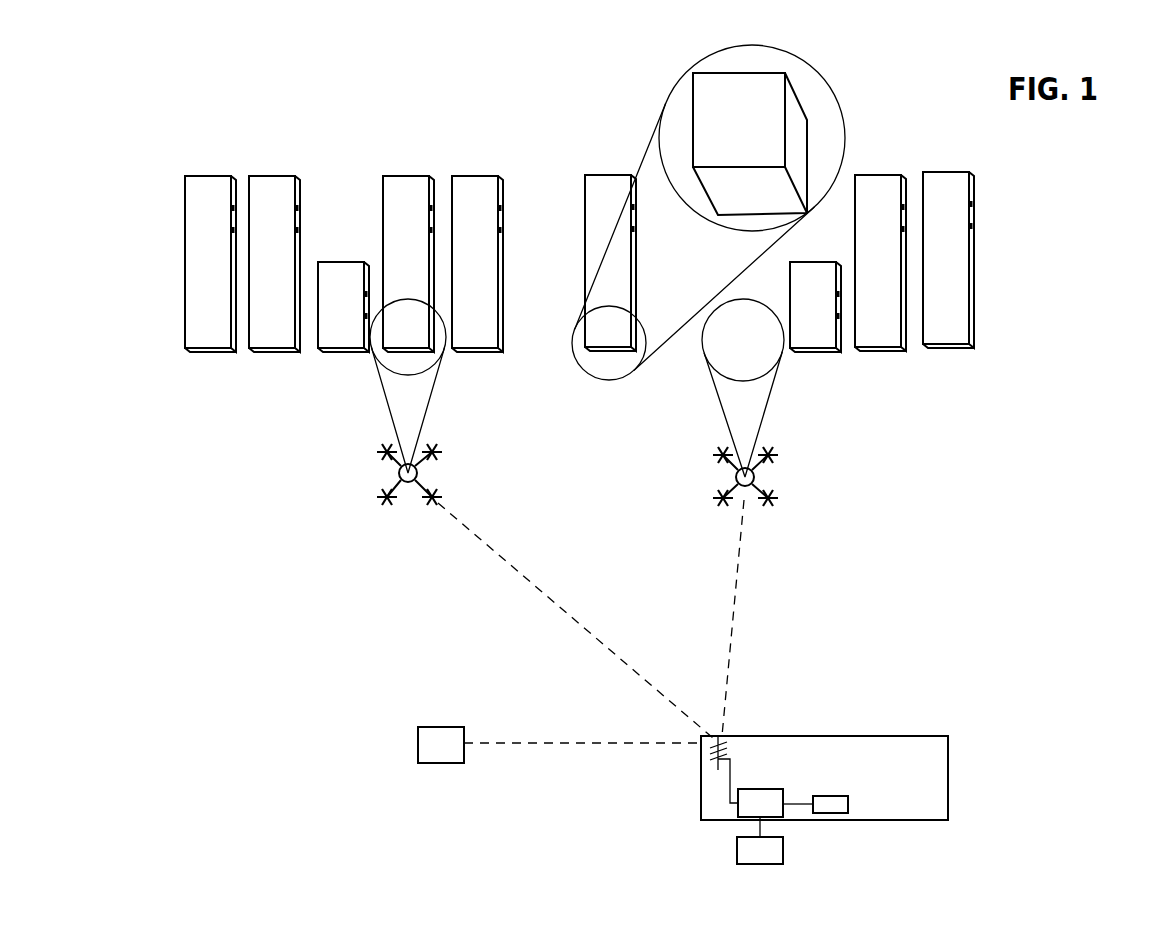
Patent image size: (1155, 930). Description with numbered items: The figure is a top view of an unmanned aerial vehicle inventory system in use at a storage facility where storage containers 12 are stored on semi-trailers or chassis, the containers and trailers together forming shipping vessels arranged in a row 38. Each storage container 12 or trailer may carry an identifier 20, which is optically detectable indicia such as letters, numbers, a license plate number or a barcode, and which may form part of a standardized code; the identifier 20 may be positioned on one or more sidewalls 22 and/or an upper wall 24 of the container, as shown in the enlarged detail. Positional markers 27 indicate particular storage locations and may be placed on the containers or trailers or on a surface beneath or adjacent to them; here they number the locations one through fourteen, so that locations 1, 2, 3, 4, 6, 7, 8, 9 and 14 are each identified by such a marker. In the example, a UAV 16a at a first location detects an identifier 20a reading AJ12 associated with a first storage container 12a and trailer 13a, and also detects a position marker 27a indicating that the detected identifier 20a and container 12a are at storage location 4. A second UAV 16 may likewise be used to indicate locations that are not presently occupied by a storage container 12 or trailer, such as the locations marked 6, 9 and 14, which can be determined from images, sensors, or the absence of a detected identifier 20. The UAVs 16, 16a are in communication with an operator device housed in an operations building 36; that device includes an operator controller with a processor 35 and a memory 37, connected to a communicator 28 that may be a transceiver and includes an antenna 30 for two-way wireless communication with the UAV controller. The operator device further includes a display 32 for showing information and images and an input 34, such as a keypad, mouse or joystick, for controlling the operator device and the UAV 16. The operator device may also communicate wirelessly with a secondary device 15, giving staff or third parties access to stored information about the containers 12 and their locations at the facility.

The position marker location 1 is at (209, 303).
The position marker location 2 is at (287, 287).
The position marker location 3 is at (315, 346).
The storage location 4 is at (394, 287).
The position marker location 6 is at (605, 305).
The position marker location 7 is at (583, 435).
The position marker location 8 is at (583, 435).
The position marker location 9 is at (743, 347).
The storage container 12 is at (629, 451).
The first storage container 12a is at (397, 205).
The trailer 13a is at (434, 203).
The position marker location 14 is at (972, 289).
The secondary device 15 is at (437, 745).
The unmanned aerial vehicle 16 is at (756, 479).
The unmanned aerial vehicle 16a is at (418, 476).
The identifier 20 is at (723, 199).
The identifier 20a is at (396, 333).
The sidewall 22 is at (797, 137).
The upper wall 24 is at (708, 95).
The positional marker 27 is at (591, 444).
The position marker 27a is at (404, 397).
The communicator 28 is at (767, 743).
The antenna 30 is at (737, 765).
The display 32 is at (830, 813).
The input 34 is at (737, 844).
The processor 35 is at (813, 753).
The operations building 36 is at (897, 736).
The memory 37 is at (762, 797).
The row 38 is at (1020, 454).